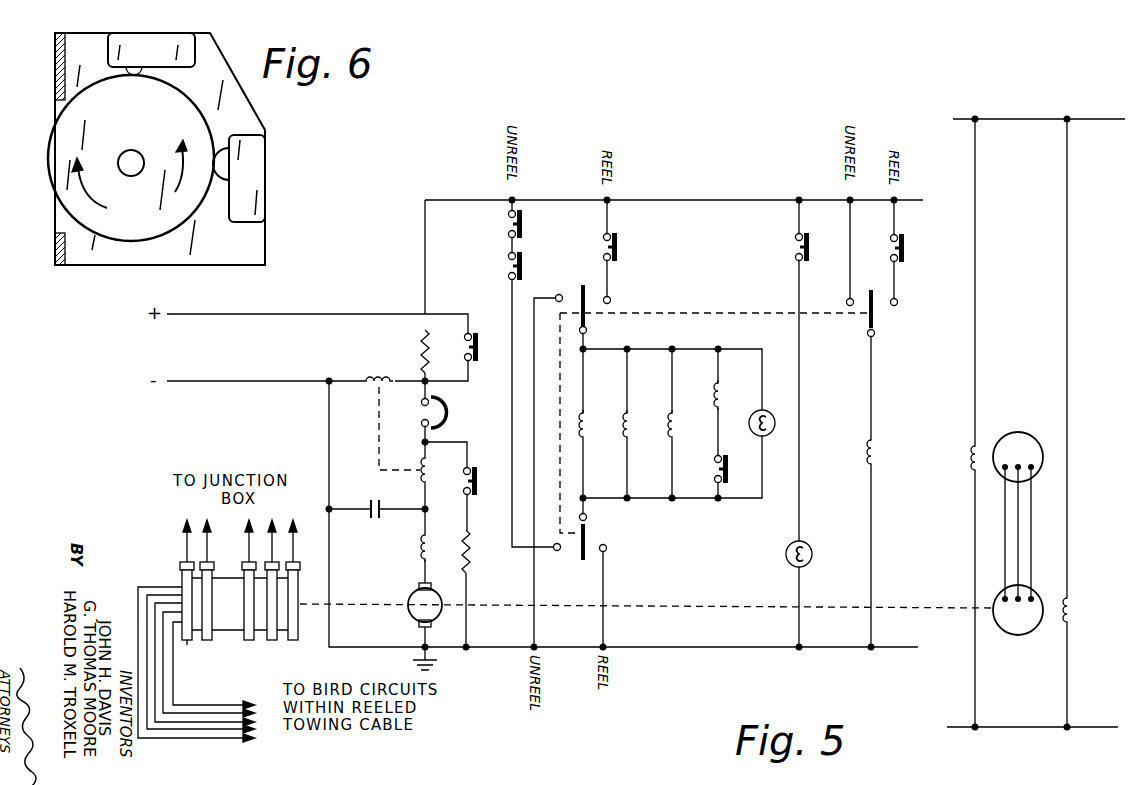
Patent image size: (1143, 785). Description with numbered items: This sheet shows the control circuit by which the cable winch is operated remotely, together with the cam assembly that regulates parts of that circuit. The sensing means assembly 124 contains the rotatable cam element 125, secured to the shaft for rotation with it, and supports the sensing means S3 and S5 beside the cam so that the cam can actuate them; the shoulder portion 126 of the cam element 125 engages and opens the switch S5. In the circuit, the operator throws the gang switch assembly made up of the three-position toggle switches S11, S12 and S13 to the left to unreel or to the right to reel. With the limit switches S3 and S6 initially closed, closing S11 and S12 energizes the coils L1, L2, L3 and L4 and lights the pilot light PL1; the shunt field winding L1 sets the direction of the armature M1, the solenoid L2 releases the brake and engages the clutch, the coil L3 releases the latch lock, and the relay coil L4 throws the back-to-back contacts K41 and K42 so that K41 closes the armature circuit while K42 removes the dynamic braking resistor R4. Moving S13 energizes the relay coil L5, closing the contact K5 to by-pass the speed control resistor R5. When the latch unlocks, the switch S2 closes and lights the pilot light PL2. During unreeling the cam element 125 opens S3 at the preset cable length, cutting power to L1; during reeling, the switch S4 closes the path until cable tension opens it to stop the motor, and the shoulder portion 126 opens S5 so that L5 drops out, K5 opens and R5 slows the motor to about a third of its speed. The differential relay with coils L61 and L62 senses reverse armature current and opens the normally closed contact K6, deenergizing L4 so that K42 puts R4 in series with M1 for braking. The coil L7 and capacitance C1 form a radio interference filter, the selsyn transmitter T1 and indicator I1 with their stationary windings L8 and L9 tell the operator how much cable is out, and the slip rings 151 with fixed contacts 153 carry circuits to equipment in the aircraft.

In FIG. 6, the sensing means assembly 124 is at (266, 250).
In FIG. 6, the cam element 125 is at (172, 126).
In FIG. 6, the shoulder portion 126 is at (66, 97).
In FIG. 6, the limit switch S3 is at (158, 56).
In FIG. 5, the limit switch S3 is at (528, 224).
In FIG. 6, the limit switch S5 is at (262, 184).
In FIG. 5, the limit switch S5 is at (910, 248).
In FIG. 5, the limit switch S6 is at (503, 266).
In FIG. 5, the limit switch S4 is at (625, 247).
In FIG. 5, the switch S2 is at (816, 247).
In FIG. 5, the three-position toggle switch S11 is at (584, 308).
In FIG. 5, the three-position toggle switch S12 is at (574, 549).
In FIG. 5, the three-position toggle switch S13 is at (870, 303).
In FIG. 5, the relay contact K5 is at (481, 359).
In FIG. 5, the relay contact K41 is at (446, 412).
In FIG. 5, the relay contact K42 is at (477, 493).
In FIG. 5, the contact K6 is at (734, 469).
In FIG. 5, the speed control resistor R5 is at (411, 349).
In FIG. 5, the dynamic braking resistor R4 is at (478, 553).
In FIG. 5, the coil L62 is at (376, 368).
In FIG. 5, the coil L61 is at (406, 474).
In FIG. 5, the coil L7 is at (409, 549).
In FIG. 5, the relay coil L4 is at (729, 395).
In FIG. 5, the shunt field winding L1 is at (593, 432).
In FIG. 5, the solenoid L2 is at (638, 432).
In FIG. 5, the coil L3 is at (683, 432).
In FIG. 5, the relay coil L5 is at (882, 456).
In FIG. 5, the stationary winding L9 is at (959, 460).
In FIG. 5, the stationary winding L8 is at (1078, 611).
In FIG. 5, the pilot light PL1 is at (772, 431).
In FIG. 5, the pilot light PL2 is at (809, 562).
In FIG. 5, the capacitance C1 is at (372, 518).
In FIG. 5, the armature M1 is at (409, 605).
In FIG. 5, the indicator I1 is at (1020, 449).
In FIG. 5, the transmitter T1 is at (1018, 621).
In FIG. 5, the fixed contacts 153 is at (179, 562).
In FIG. 5, the slip rings 151 is at (187, 640).